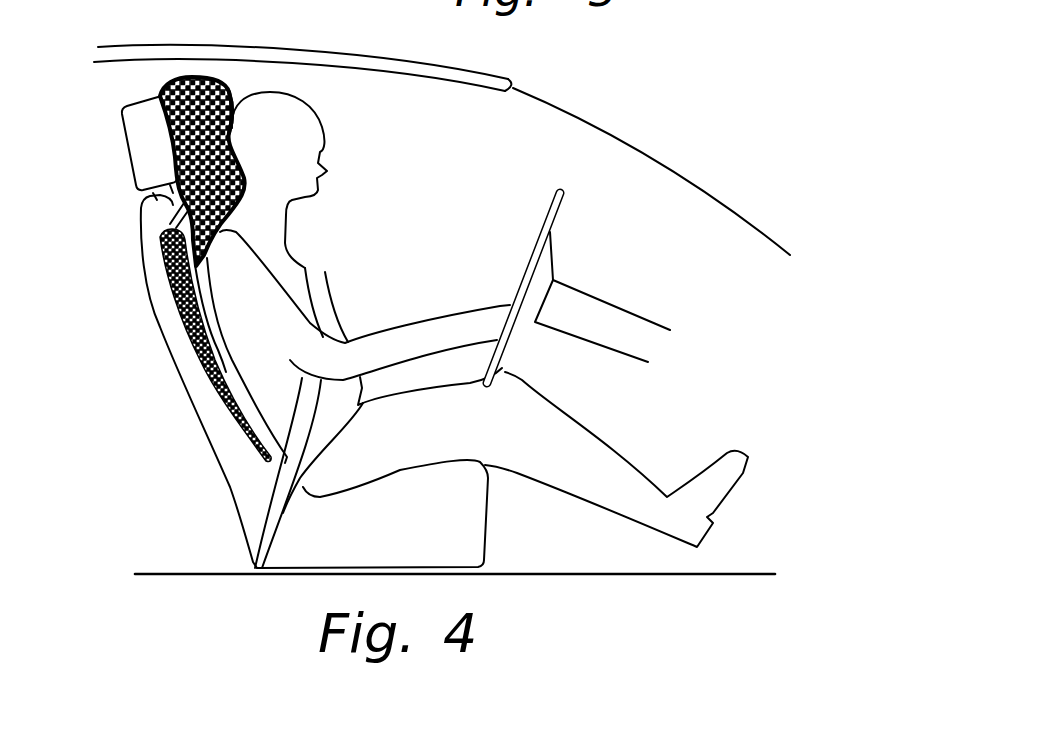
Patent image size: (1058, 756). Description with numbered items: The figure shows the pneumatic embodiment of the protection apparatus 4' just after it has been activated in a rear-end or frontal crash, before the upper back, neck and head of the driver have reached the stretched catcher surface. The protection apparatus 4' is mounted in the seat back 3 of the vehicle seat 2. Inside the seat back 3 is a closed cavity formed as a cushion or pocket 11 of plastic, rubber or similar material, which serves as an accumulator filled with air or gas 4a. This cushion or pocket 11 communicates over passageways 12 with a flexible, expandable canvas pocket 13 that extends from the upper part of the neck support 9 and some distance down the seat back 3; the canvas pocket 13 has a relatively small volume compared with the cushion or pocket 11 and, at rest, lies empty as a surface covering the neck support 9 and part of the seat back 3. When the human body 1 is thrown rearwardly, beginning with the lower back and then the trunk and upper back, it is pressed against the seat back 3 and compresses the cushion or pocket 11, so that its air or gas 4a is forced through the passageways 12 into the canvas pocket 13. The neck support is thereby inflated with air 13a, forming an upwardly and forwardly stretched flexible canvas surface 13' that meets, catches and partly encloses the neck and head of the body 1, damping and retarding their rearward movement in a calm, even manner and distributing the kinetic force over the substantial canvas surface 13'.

The human body 1 is at (287, 265).
The vehicle seat 2 is at (424, 538).
The seat back 3 is at (197, 412).
The protection apparatus 4' is at (192, 360).
The air or gas 4a is at (167, 263).
The neck support 9 is at (148, 158).
The cushion or pocket 11 is at (173, 295).
The passageways 12 is at (160, 213).
The canvas pocket 13 is at (156, 169).
The flexible canvas surface 13' is at (313, 111).
The air 13a is at (200, 103).